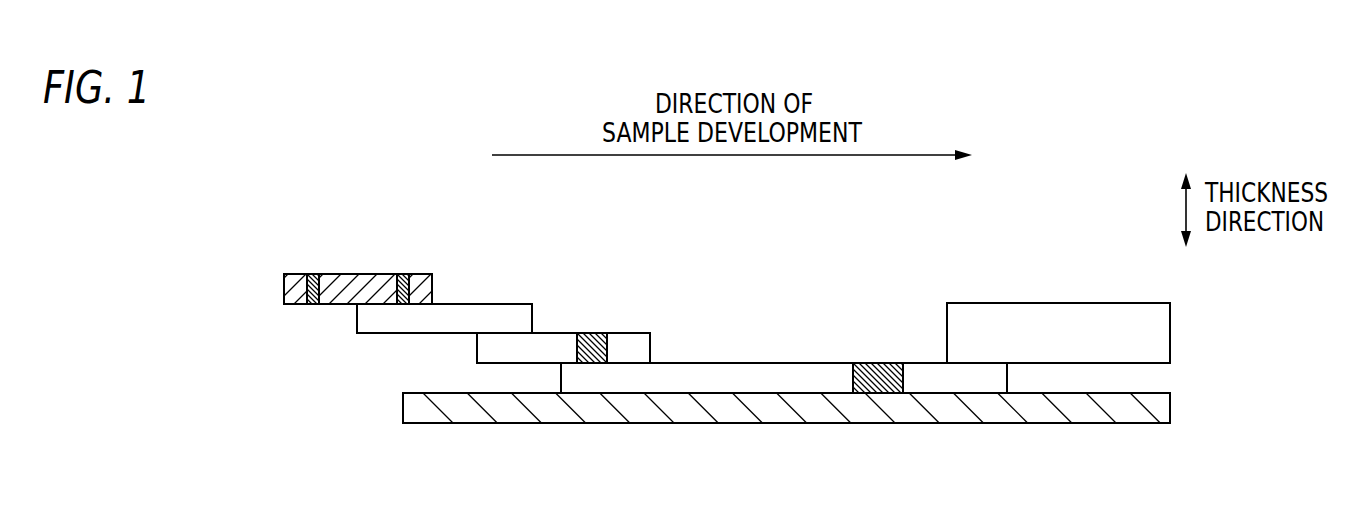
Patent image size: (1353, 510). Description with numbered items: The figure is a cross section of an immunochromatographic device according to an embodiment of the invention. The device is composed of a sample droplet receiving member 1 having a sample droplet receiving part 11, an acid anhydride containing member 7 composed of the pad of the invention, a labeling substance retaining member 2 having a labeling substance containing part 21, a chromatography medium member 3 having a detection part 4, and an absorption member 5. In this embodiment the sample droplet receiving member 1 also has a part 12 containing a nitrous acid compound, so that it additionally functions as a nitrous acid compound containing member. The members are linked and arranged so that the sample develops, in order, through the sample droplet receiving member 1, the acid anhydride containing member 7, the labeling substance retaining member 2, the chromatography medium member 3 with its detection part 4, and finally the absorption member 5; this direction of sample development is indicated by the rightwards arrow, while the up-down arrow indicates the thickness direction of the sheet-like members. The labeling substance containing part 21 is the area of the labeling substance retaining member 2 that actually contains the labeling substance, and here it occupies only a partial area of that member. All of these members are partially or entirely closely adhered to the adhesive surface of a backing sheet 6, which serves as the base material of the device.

The sample droplet receiving member 1 is at (358, 287).
The sample droplet receiving part 11 is at (313, 287).
The part containing nitrous acid compound 12 is at (403, 287).
The acid anhydride containing member 7 is at (492, 318).
The labeling substance retaining member 2 is at (555, 345).
The labeling substance containing part 21 is at (592, 335).
The chromatography medium member 3 is at (757, 378).
The detection part 4 is at (878, 378).
The absorption member 5 is at (1062, 320).
The backing sheet 6 is at (1157, 408).